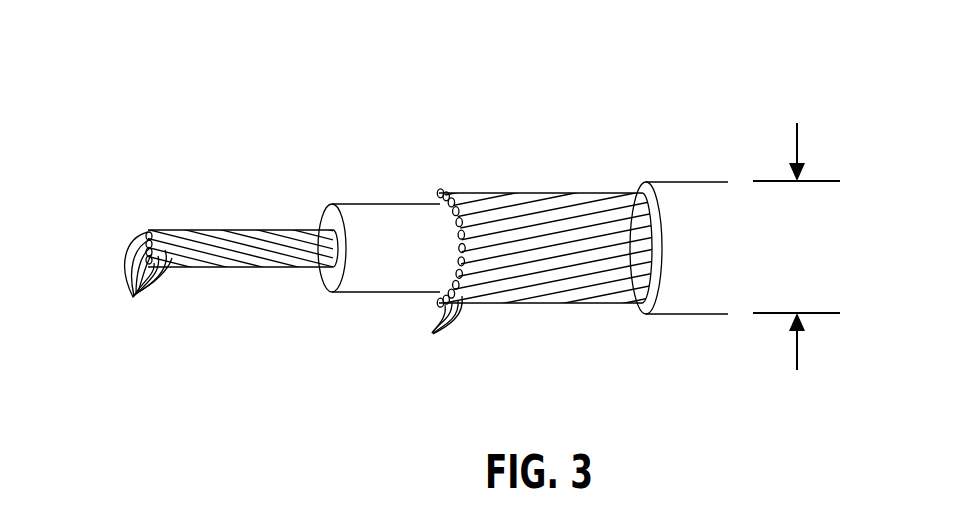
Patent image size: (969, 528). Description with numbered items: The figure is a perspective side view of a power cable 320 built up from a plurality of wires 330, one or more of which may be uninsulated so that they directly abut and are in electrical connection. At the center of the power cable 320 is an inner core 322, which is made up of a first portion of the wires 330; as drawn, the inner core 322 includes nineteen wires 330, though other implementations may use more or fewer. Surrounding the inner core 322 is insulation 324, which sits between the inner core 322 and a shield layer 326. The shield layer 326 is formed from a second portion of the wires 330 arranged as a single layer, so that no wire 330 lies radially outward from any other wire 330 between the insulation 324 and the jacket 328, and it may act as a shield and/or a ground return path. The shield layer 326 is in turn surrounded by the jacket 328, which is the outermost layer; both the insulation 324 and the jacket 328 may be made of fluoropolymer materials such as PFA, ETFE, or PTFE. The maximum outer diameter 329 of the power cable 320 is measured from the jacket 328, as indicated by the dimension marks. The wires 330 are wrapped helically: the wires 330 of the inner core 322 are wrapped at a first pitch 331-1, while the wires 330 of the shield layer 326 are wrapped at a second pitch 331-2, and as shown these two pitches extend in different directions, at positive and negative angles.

The power cable 320 is at (90, 72).
The inner core 322 is at (220, 190).
The insulation 324 is at (372, 162).
The shield layer 326 is at (526, 168).
The jacket 328 is at (679, 155).
The maximum outer diameter 329 is at (798, 150).
The wires 330 is at (291, 277).
The first pitch 331-1 is at (279, 258).
The second pitch 331-2 is at (600, 295).